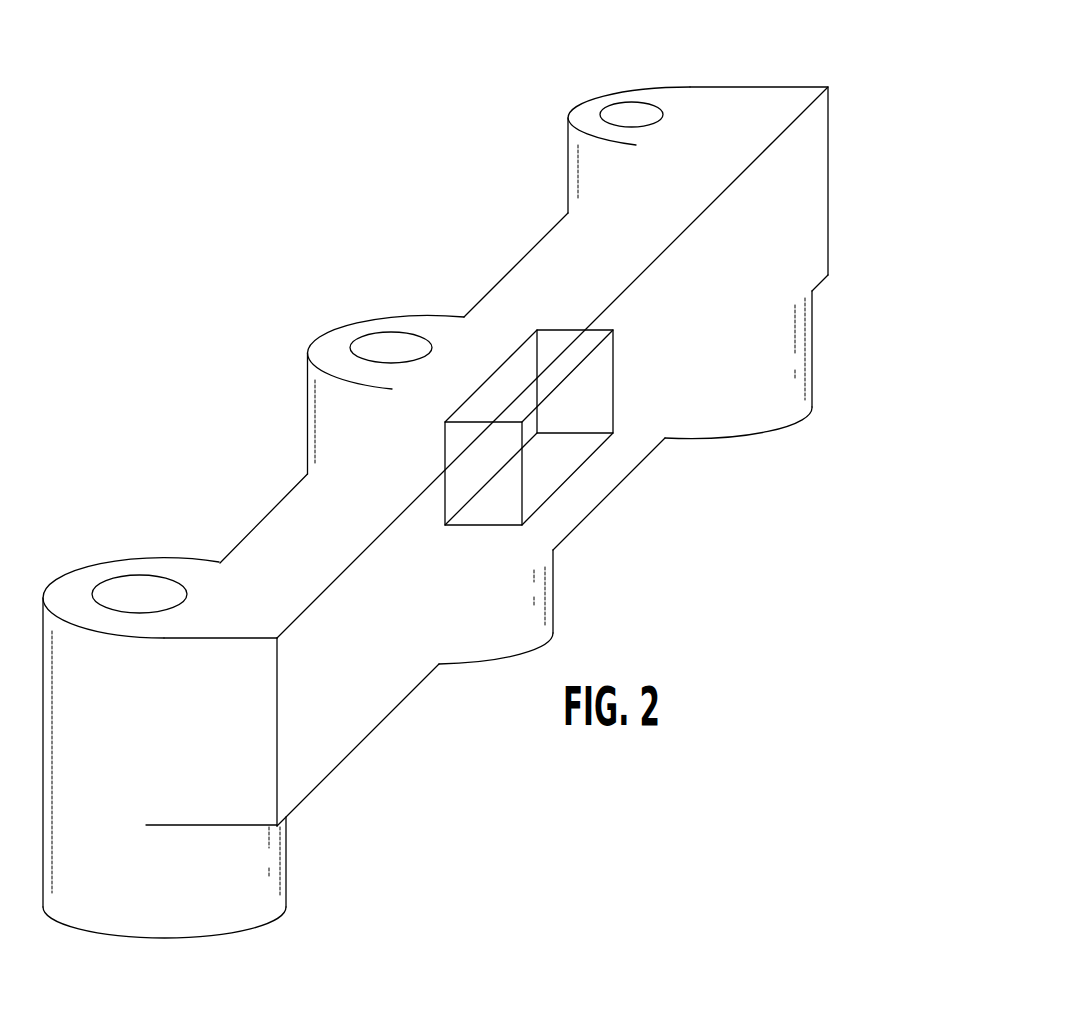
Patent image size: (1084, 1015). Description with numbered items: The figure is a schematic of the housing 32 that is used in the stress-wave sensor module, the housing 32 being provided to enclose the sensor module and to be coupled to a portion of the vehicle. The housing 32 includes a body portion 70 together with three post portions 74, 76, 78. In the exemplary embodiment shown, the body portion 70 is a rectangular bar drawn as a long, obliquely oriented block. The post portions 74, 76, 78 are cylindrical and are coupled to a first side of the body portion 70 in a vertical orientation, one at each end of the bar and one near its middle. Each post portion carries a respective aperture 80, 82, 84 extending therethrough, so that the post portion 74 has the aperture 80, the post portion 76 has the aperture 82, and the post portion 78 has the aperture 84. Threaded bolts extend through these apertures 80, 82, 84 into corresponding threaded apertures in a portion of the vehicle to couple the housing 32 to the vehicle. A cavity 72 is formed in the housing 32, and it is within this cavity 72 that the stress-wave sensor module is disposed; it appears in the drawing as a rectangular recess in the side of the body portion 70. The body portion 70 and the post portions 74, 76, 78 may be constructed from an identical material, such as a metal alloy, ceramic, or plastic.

The housing 32 is at (829, 134).
The body portion 70 is at (532, 278).
The cavity 72 is at (585, 410).
The post portion 74 is at (122, 559).
The post portion 76 is at (362, 313).
The post portion 78 is at (702, 87).
The aperture 80 is at (138, 605).
The aperture 82 is at (397, 363).
The aperture 84 is at (628, 128).